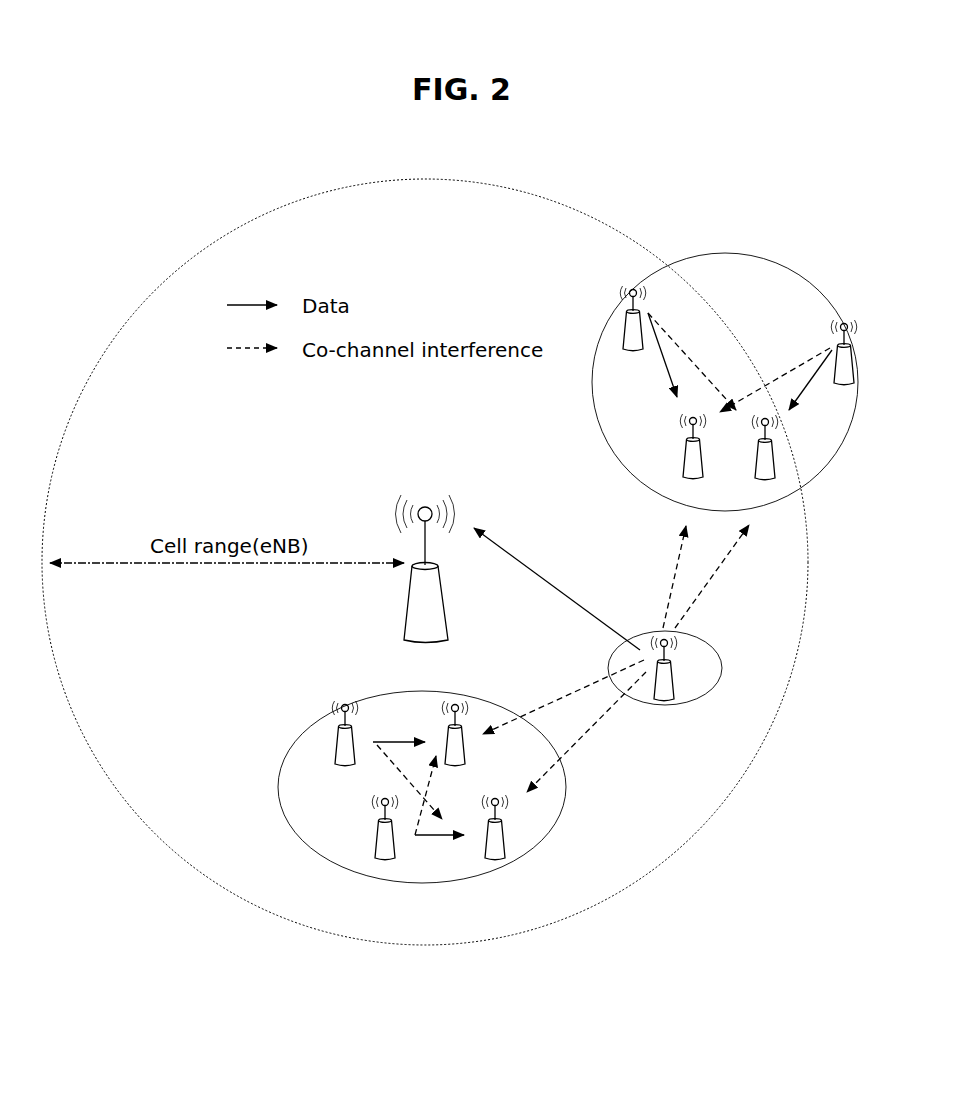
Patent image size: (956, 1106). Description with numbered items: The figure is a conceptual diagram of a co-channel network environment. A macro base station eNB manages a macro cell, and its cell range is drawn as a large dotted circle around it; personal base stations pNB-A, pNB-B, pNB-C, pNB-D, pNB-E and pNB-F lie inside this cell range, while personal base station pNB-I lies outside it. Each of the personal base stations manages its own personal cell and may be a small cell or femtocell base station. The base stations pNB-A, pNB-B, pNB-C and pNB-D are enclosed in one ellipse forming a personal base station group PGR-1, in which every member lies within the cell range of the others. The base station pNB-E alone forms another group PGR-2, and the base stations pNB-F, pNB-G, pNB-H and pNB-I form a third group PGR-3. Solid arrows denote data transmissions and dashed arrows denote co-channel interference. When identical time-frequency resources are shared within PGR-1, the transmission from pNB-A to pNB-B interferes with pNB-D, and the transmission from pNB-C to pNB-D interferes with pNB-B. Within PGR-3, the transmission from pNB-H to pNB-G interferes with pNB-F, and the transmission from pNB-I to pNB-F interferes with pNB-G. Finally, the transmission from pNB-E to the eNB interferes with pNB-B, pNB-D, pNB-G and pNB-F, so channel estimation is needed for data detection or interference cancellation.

The macro base station eNB is at (425, 557).
The personal base station pNB-A is at (341, 721).
The personal base station pNB-B is at (456, 721).
The personal base station pNB-C is at (383, 840).
The personal base station pNB-D is at (498, 840).
The personal base station pNB-E is at (665, 680).
The personal base station pNB-F is at (768, 460).
The personal base station pNB-G is at (689, 459).
The personal base station pNB-H is at (627, 334).
The personal base station pNB-I is at (842, 366).
The personal base station group PGR-1 is at (567, 785).
The personal base station group PGR-2 is at (712, 650).
The personal base station group PGR-3 is at (778, 258).